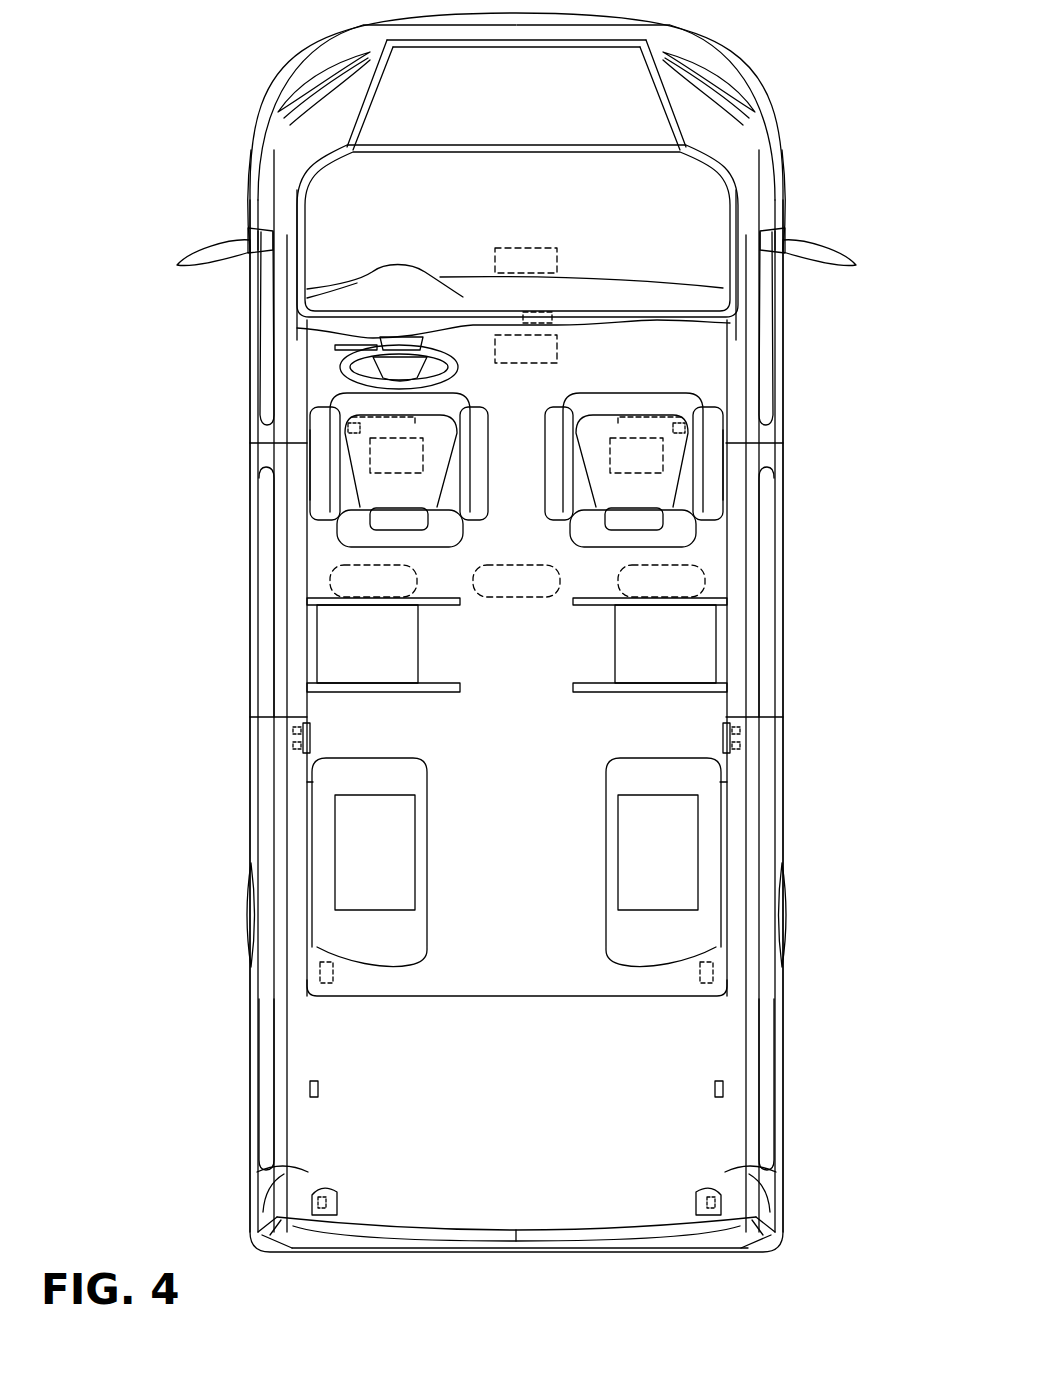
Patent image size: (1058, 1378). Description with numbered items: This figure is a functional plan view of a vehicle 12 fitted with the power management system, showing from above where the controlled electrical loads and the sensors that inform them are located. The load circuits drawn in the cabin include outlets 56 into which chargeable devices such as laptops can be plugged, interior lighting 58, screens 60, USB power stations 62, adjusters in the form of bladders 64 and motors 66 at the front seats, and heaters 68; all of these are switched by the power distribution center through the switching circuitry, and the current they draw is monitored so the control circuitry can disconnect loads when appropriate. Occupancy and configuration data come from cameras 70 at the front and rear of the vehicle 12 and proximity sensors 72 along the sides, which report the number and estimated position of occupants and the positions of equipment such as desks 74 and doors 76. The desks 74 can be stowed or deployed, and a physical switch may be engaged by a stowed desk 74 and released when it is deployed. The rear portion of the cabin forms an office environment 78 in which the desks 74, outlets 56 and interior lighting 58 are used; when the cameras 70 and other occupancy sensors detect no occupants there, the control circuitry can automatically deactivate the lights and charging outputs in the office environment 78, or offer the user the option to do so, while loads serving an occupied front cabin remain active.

The vehicle 12 is at (428, 112).
The outlets 56 is at (300, 735).
The interior lighting 58 is at (330, 578).
The screens 60 is at (557, 350).
The USB power stations 62 is at (552, 315).
The bladders 64 is at (370, 455).
The motors 66 is at (325, 425).
The heaters 68 is at (355, 416).
The cameras 70 is at (537, 248).
The proximity sensors 72 is at (310, 1088).
The desks 74 is at (330, 860).
The doors 76 is at (265, 350).
The office environment 78 is at (497, 884).